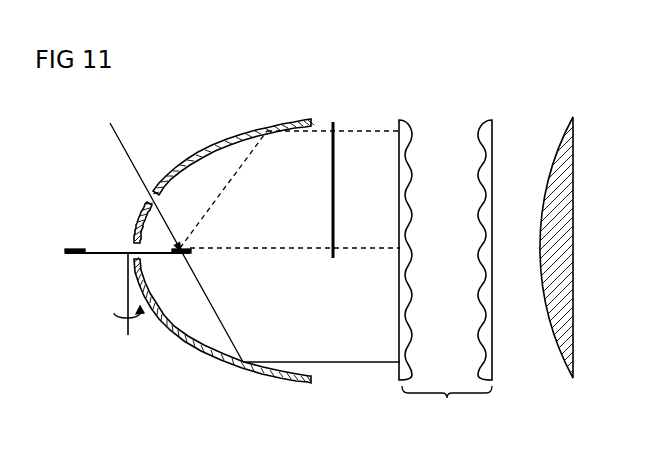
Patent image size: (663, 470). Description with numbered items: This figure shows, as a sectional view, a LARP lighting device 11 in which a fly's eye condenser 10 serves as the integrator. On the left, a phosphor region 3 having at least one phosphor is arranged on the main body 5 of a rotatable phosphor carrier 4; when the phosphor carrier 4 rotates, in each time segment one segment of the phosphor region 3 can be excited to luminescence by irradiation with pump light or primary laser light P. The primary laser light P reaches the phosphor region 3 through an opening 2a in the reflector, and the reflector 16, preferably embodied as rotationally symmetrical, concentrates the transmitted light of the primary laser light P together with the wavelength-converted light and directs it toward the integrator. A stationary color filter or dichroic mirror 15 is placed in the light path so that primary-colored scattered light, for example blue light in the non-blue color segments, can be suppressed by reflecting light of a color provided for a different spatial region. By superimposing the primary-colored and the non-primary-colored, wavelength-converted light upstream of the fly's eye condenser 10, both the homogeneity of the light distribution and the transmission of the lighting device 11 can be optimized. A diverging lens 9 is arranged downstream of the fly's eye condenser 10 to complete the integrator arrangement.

The projection arrangement 11 is at (535, 102).
The reflector 16 is at (234, 133).
The opening 2a is at (150, 190).
The primary laser light P is at (122, 147).
The phosphor region 3 is at (75, 250).
The main body 5 is at (108, 251).
The phosphor carrier 4 is at (110, 272).
The dichroic mirror 15 is at (336, 124).
The fly's eye condenser 10 is at (445, 273).
The diverging lens 9 is at (558, 364).